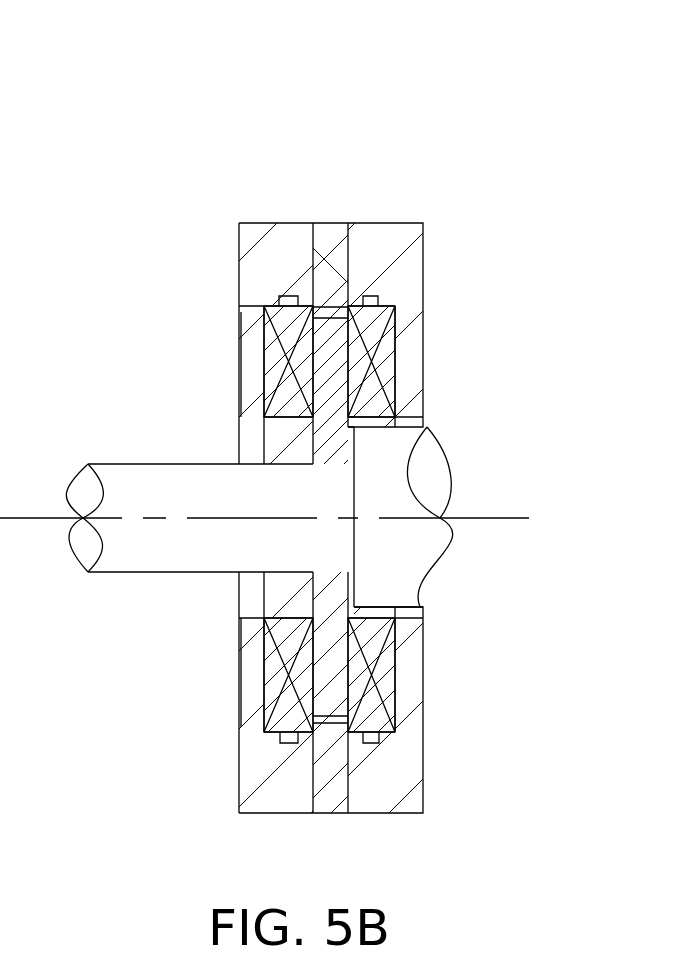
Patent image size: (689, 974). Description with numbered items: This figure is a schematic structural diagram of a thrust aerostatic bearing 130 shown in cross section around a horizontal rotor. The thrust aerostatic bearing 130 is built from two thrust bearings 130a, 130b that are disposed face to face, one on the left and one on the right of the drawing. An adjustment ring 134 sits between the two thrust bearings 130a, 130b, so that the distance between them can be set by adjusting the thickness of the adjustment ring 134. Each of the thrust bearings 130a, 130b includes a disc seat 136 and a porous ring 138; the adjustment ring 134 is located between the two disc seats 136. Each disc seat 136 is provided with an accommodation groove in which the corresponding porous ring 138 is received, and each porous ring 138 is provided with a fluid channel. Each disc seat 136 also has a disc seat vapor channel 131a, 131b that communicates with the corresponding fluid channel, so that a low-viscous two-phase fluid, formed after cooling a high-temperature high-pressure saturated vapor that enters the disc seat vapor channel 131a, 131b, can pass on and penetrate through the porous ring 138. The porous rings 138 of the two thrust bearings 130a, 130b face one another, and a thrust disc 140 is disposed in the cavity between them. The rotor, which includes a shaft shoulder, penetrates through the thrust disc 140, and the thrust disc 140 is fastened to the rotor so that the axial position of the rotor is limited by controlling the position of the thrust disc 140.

The thrust aerostatic bearing 130 is at (522, 108).
The thrust bearing 130a is at (276, 251).
The thrust bearing 130b is at (377, 240).
The disc seat vapor channel 131a is at (279, 299).
The disc seat vapor channel 131b is at (378, 299).
The adjustment ring 134 is at (323, 247).
The disc seat 136 is at (263, 275).
The porous ring 138 is at (283, 364).
The thrust disc 140 is at (336, 412).